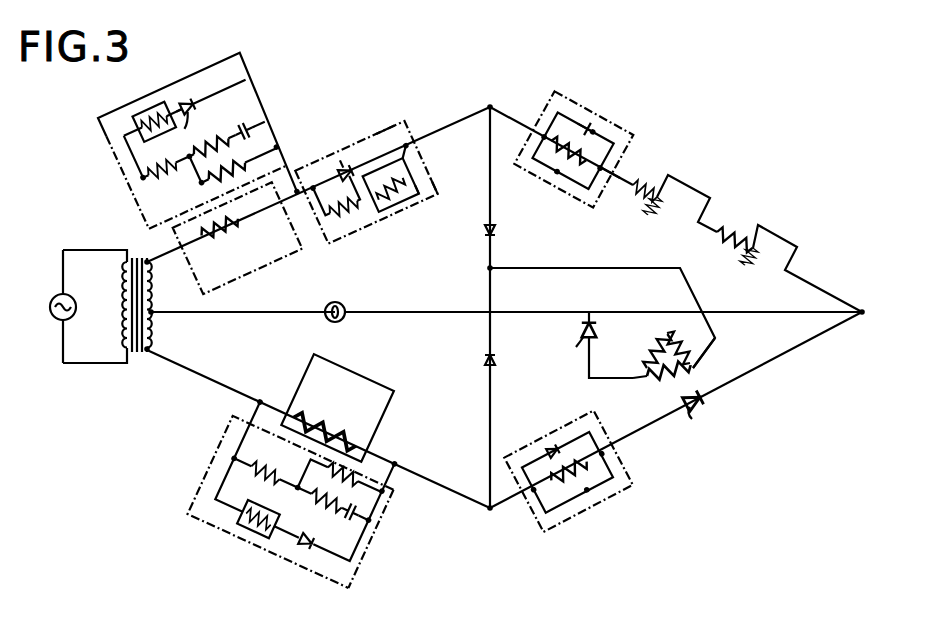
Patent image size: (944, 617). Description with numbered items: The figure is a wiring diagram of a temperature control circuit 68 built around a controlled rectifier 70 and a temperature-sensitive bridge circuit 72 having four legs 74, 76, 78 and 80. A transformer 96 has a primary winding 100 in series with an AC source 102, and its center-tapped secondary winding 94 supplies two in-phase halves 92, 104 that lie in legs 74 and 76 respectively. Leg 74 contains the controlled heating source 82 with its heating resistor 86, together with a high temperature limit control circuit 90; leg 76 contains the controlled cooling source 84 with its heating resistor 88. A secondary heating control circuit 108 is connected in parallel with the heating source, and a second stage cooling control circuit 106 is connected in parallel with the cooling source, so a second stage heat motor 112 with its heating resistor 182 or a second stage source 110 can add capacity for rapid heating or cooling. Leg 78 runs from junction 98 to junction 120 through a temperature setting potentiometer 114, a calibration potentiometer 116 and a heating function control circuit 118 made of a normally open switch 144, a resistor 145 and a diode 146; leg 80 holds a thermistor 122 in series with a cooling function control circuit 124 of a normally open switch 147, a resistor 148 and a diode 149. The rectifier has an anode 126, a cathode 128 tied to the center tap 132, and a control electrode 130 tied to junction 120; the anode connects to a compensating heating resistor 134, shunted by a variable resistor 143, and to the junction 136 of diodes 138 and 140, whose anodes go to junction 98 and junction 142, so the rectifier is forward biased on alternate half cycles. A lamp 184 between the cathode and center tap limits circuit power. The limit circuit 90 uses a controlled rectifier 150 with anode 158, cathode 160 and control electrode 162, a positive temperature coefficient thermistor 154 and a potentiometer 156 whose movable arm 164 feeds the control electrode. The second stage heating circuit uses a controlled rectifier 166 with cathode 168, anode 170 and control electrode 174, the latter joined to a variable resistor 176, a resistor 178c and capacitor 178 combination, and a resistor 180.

The temperature control circuit 68 is at (446, 283).
The controlled rectifier 70 is at (574, 347).
The bridge circuit 72 is at (521, 101).
The leg 74 is at (452, 124).
The leg 76 is at (214, 380).
The leg 78 is at (628, 172).
The leg 80 is at (772, 361).
The controlled heating source 82 is at (217, 163).
The controlled cooling source 84 is at (364, 371).
The heating resistor 86 is at (253, 194).
The heating resistor 88 is at (354, 437).
The high temperature limit control circuit 90 is at (389, 126).
The half of secondary winding 92 is at (158, 281).
The center-tapped secondary winding 94 is at (147, 354).
The transformer 96 is at (147, 260).
The junction 98 is at (492, 104).
The primary winding 100 is at (122, 269).
The AC source 102 is at (56, 296).
The half of secondary winding 104 is at (153, 344).
The second stage cooling control circuit 106 is at (374, 546).
The secondary heating control circuit 108 is at (246, 58).
The source 110 is at (228, 533).
The second stage heat motor 112 is at (152, 107).
The temperature setting potentiometer 114 is at (788, 268).
The calibration potentiometer 116 is at (673, 209).
The heating function control circuit 118 is at (588, 107).
The junction 120 is at (863, 310).
The temperature sensitive variable impedance device 122 is at (703, 407).
The cooling function control circuit 124 is at (582, 520).
The anode 126 is at (597, 338).
The cathode 128 is at (581, 331).
The control electrode 130 is at (592, 319).
The center tap 132 is at (156, 312).
The heating resistor 134 is at (700, 370).
The junction 136 is at (494, 269).
The diode 138 is at (496, 233).
The diode 140 is at (485, 366).
The junction 142 is at (488, 512).
The variable resistor 143 is at (658, 341).
The normally open switch 144 is at (606, 114).
The resistor 145 is at (566, 181).
The diode 146 is at (555, 178).
The normally open switch 147 is at (590, 495).
The resistor 148 is at (532, 494).
The diode 149 is at (552, 445).
The controlled rectifier 150 is at (352, 152).
The positive temperature coefficient thermistor 154 is at (360, 206).
The potentiometer 156 is at (436, 193).
The anode 158 is at (343, 164).
The cathode 160 is at (343, 162).
The control electrode 162 is at (362, 188).
The movable arm 164 is at (421, 196).
The controlled rectifier 166 is at (192, 98).
The cathode 168 is at (185, 100).
The anode 170 is at (178, 130).
The control electrode 174 is at (248, 68).
The variable resistor 176 is at (146, 175).
The capacitor 178 is at (254, 122).
The resistor 178c is at (250, 83).
The resistor 180 is at (247, 160).
The heating resistor 182 is at (139, 122).
The lamp 184 is at (345, 305).